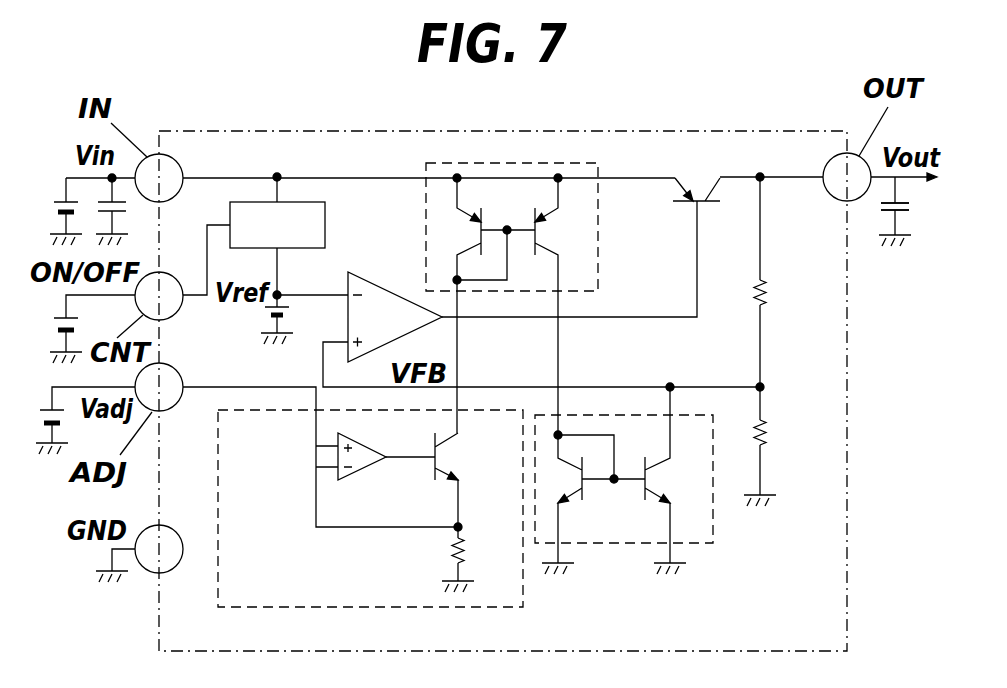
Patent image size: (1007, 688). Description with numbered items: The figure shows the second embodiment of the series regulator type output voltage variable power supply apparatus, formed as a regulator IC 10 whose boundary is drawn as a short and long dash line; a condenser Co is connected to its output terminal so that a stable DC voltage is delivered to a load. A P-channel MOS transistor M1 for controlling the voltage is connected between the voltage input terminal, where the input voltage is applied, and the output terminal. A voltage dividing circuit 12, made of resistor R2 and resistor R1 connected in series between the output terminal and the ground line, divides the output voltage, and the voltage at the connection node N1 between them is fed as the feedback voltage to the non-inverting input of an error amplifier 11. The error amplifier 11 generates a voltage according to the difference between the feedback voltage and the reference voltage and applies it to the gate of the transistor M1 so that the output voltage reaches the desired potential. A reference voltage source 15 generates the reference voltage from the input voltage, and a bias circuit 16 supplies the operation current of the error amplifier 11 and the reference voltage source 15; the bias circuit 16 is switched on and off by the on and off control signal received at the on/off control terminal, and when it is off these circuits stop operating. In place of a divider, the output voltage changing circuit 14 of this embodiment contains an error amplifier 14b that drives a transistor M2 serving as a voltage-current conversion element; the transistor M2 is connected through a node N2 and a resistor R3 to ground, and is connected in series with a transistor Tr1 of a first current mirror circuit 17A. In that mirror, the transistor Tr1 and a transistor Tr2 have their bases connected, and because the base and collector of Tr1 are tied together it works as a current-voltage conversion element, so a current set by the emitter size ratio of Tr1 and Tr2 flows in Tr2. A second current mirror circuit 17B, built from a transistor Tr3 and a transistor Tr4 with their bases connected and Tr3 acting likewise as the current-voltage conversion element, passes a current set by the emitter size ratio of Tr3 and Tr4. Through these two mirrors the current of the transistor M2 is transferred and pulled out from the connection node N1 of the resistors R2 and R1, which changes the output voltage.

The regulator IC 10 is at (538, 132).
The error amplifier 11 is at (378, 283).
The voltage dividing circuit 12 is at (786, 361).
The output voltage changing circuit 14 is at (409, 525).
The error amplifier 14b is at (363, 468).
The reference voltage source 15 is at (252, 325).
The bias circuit 16 is at (327, 222).
The first current mirror circuit 17A is at (546, 232).
The second current mirror circuit 17B is at (661, 495).
The P-channel MOS transistor for controlling the voltage M1 is at (693, 174).
The transistor M2 is at (444, 480).
The transistor Tr1 is at (454, 229).
The transistor Tr2 is at (563, 229).
The transistor Tr3 is at (575, 504).
The transistor Tr4 is at (674, 480).
The resistor R1 is at (808, 510).
The resistor R2 is at (781, 282).
The resistor R3 is at (476, 559).
The connection node N1 is at (765, 382).
The node N2 is at (460, 525).
The condenser Co is at (914, 211).